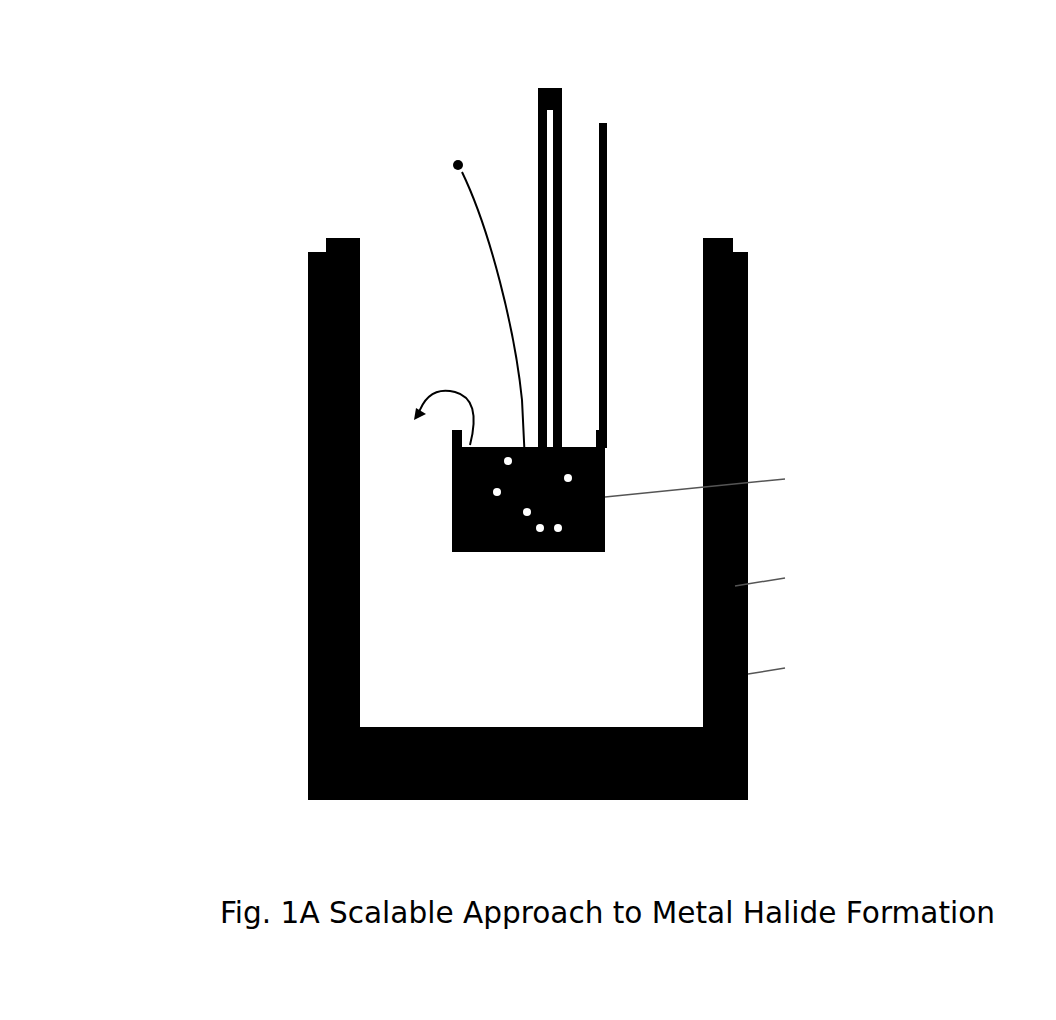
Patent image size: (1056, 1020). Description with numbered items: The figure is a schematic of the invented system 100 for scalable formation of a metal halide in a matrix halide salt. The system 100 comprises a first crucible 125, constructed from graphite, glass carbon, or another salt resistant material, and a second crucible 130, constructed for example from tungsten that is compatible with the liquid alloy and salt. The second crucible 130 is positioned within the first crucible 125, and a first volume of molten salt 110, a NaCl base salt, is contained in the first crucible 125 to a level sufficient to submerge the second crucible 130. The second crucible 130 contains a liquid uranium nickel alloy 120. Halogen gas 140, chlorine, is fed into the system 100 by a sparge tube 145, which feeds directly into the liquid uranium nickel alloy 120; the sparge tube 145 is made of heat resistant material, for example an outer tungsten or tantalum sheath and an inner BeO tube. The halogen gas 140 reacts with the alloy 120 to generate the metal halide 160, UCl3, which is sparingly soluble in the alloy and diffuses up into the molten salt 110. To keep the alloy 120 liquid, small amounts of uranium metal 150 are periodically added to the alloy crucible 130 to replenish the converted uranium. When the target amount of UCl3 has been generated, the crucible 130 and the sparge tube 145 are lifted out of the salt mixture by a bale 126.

The system 100 is at (609, 552).
The molten salt 110 is at (423, 320).
The liquid uranium nickel alloy 120 is at (477, 487).
The first crucible 125 is at (664, 541).
The bale 126 is at (698, 285).
The second crucible 130 is at (858, 440).
The halogen gas 140 is at (712, 60).
The sparge tube 145 is at (552, 88).
The uranium metal 150 is at (418, 101).
The metal halide 160 is at (432, 622).